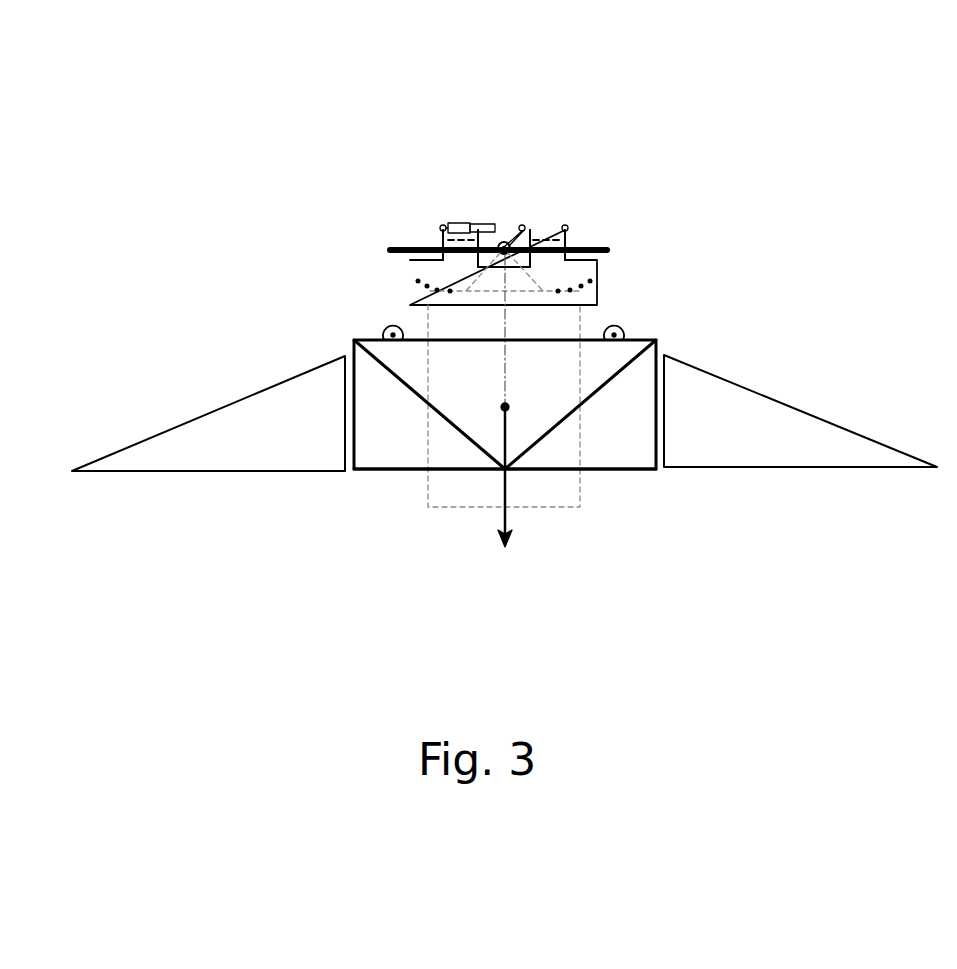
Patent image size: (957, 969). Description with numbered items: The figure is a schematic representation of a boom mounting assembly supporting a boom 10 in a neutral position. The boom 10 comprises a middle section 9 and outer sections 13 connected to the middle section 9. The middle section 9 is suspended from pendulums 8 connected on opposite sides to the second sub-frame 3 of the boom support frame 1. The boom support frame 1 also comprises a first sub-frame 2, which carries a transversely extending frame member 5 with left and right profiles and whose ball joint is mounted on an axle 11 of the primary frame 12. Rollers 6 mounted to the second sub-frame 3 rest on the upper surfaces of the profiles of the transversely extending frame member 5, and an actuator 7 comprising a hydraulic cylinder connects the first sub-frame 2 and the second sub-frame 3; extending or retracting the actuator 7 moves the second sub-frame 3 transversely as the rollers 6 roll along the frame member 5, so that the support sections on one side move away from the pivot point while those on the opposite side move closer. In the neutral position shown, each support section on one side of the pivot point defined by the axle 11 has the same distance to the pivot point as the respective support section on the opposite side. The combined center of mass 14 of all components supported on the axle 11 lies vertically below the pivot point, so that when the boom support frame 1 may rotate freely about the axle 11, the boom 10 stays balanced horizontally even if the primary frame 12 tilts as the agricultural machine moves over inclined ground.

The boom support frame 1 is at (598, 272).
The first sub-frame 2 is at (413, 236).
The second sub-frame 3 is at (412, 280).
The transversely extending frame member 5 is at (410, 250).
The rollers 6 is at (441, 226).
The actuator 7 is at (458, 222).
The pendulums 8 is at (413, 310).
The middle section 9 is at (365, 470).
The boom 10 is at (402, 471).
The axle 11 is at (510, 240).
The primary frame 12 is at (445, 510).
The outer sections 13 is at (197, 471).
The combined center of mass 14 is at (507, 410).